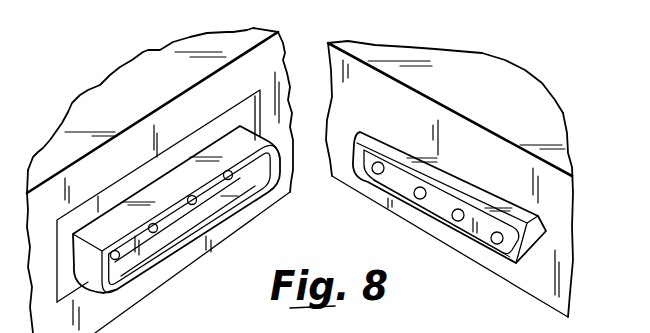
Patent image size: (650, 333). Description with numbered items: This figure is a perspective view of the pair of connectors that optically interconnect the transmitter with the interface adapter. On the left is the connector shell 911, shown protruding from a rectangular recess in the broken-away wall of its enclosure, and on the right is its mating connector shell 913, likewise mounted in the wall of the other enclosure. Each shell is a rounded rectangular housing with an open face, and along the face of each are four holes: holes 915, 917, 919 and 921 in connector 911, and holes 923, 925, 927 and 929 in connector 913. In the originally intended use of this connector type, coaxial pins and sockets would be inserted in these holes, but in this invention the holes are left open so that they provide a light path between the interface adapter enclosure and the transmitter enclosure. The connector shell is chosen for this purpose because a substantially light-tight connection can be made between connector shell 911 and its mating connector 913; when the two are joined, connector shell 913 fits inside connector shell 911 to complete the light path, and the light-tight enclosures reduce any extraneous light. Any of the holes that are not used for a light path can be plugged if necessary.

The connector shell 911 is at (213, 155).
The mating connector shell 913 is at (462, 180).
The hole 915 is at (119, 259).
The hole 917 is at (158, 230).
The hole 919 is at (197, 201).
The hole 921 is at (280, 192).
The hole 923 is at (497, 246).
The hole 925 is at (455, 221).
The hole 927 is at (415, 199).
The hole 929 is at (373, 147).